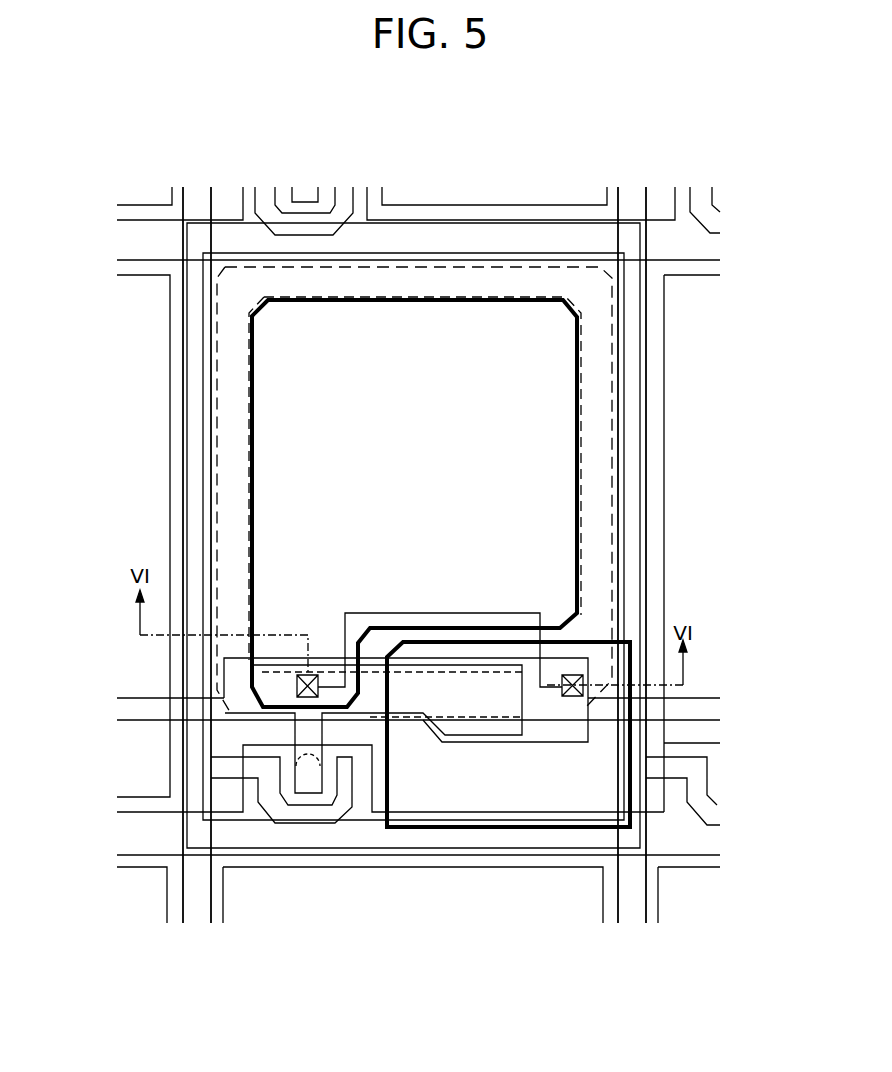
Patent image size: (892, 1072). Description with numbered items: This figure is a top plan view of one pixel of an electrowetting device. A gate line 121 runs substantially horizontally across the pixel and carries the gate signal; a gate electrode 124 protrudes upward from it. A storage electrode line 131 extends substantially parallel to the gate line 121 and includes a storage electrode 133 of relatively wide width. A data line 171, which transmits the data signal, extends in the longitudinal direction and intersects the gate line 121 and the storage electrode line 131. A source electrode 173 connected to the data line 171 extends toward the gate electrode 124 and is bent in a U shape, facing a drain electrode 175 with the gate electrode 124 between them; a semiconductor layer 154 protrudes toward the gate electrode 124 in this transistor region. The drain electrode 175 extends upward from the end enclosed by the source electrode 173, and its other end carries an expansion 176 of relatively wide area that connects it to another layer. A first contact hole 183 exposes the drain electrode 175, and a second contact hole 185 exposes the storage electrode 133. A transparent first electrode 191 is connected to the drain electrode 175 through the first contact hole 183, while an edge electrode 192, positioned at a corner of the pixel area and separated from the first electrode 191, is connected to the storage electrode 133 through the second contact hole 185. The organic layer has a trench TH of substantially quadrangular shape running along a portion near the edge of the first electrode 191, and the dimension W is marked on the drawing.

The gate line 121 is at (463, 857).
The gate electrode 124 is at (378, 782).
The storage electrode line 131 is at (137, 720).
The storage electrode 133 is at (425, 656).
The semiconductor layer 154 is at (313, 777).
The data line 171 is at (205, 492).
The source electrode 173 is at (288, 827).
The drain electrode 175 is at (375, 745).
The expansion 176 is at (523, 712).
The first contact hole 183 is at (325, 672).
The second contact hole 185 is at (570, 672).
The first electrode 191 is at (573, 455).
The edge electrode 192 is at (600, 640).
The width W is at (200, 325).
The trench TH is at (612, 410).